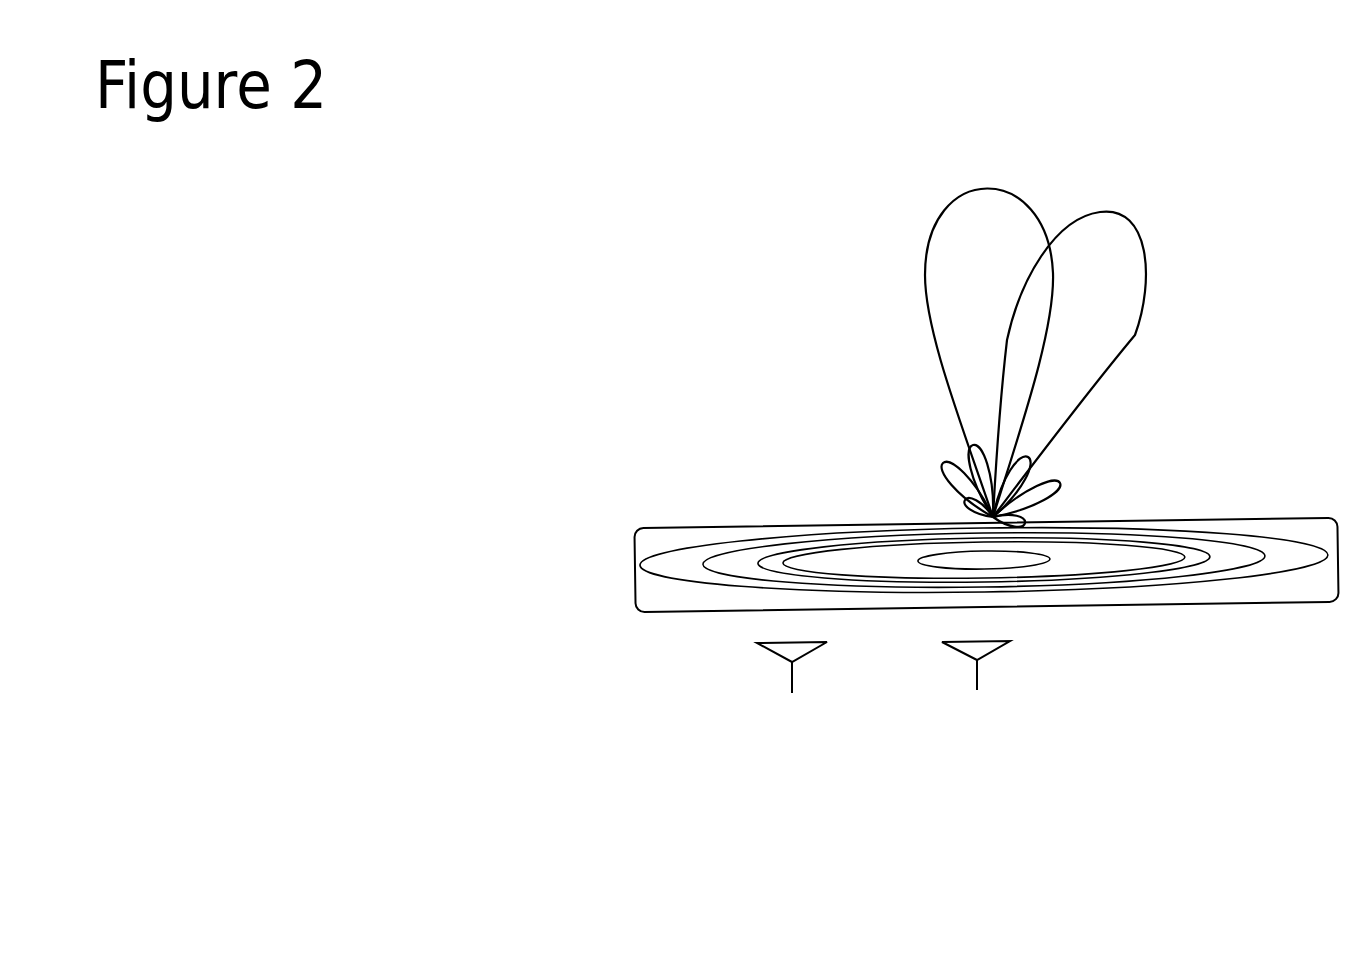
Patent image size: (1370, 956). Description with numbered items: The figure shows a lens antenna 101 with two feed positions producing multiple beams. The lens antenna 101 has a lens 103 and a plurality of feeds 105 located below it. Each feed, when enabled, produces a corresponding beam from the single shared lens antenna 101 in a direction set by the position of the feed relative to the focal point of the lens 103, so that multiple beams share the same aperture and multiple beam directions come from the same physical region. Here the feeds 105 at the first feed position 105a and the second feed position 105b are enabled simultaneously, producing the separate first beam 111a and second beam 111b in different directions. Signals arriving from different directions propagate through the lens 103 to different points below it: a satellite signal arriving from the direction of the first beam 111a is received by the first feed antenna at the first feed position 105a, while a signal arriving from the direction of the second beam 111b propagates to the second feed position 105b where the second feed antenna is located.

The lens antenna 101 is at (787, 396).
The lens 103 is at (1277, 516).
The feeds 105 is at (647, 642).
The feed position 1 105a is at (990, 652).
The feed position 2 105b is at (772, 653).
The Beam 1 111a is at (955, 329).
The Beam 2 111b is at (1115, 341).